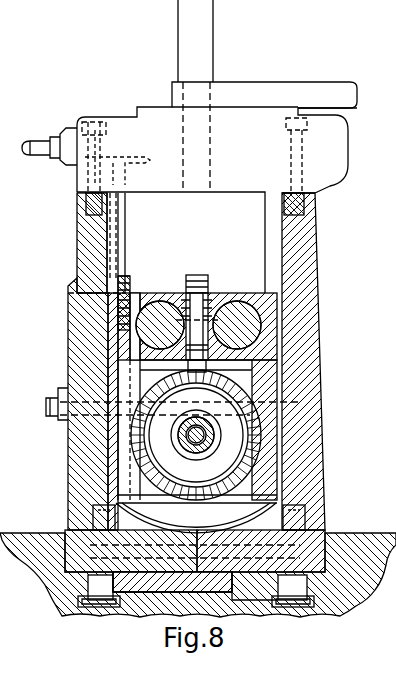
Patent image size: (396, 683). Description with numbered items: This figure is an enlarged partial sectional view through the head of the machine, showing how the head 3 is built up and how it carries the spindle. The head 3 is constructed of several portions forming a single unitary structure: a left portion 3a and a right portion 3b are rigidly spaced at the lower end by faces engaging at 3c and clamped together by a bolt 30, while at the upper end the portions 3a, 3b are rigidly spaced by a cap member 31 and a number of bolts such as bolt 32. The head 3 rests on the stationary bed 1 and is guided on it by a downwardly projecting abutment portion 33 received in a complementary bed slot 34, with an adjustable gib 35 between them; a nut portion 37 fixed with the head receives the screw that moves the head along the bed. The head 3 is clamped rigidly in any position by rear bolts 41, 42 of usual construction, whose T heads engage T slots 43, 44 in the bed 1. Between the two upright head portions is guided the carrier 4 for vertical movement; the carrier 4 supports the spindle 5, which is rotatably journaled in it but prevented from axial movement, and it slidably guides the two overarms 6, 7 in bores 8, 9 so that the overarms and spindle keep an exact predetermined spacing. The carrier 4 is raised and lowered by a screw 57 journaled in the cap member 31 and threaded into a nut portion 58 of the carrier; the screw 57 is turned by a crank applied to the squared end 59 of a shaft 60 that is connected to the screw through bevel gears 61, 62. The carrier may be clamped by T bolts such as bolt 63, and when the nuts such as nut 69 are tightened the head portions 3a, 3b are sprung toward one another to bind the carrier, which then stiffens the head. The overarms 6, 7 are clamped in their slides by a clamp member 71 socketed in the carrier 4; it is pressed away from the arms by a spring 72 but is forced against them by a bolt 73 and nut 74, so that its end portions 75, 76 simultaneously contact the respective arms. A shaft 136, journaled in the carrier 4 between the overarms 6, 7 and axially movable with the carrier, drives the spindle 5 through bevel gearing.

The bed 1 is at (327, 588).
The head 3 is at (88, 243).
The left head portion 3a is at (68, 475).
The right head portion 3b is at (312, 302).
The engaging faces 3c is at (158, 600).
The carrier 4 is at (143, 290).
The spindle 5 is at (218, 428).
The overarm 6 is at (196, 370).
The overarm 7 is at (243, 370).
The bore 8 is at (158, 300).
The bore 9 is at (250, 302).
The bolt 30 is at (138, 520).
The cap member 31 is at (120, 122).
The bolt 32 is at (290, 175).
The abutment portion 33 is at (153, 590).
The bed slot 34 is at (237, 600).
The adjustable gib 35 is at (262, 510).
The nut portion 37 is at (89, 415).
The rear bolt 41 is at (92, 575).
The rear bolt 42 is at (295, 504).
The T slot 43 is at (96, 607).
The T slot 44 is at (300, 607).
The screw 57 is at (128, 278).
The nut portion 58 is at (108, 282).
The squared end 59 is at (27, 152).
The shaft 60 is at (80, 126).
The bevel gear 61 is at (72, 188).
The bevel gear 62 is at (107, 130).
The T bolt 63 is at (46, 407).
The nut 69 is at (58, 392).
The clamp member 71 is at (215, 325).
The spring 72 is at (210, 300).
The bolt 73 is at (197, 275).
The nut 74 is at (184, 328).
The end portion 75 is at (183, 298).
The end portion 76 is at (246, 300).
The shaft 136 is at (206, 82).